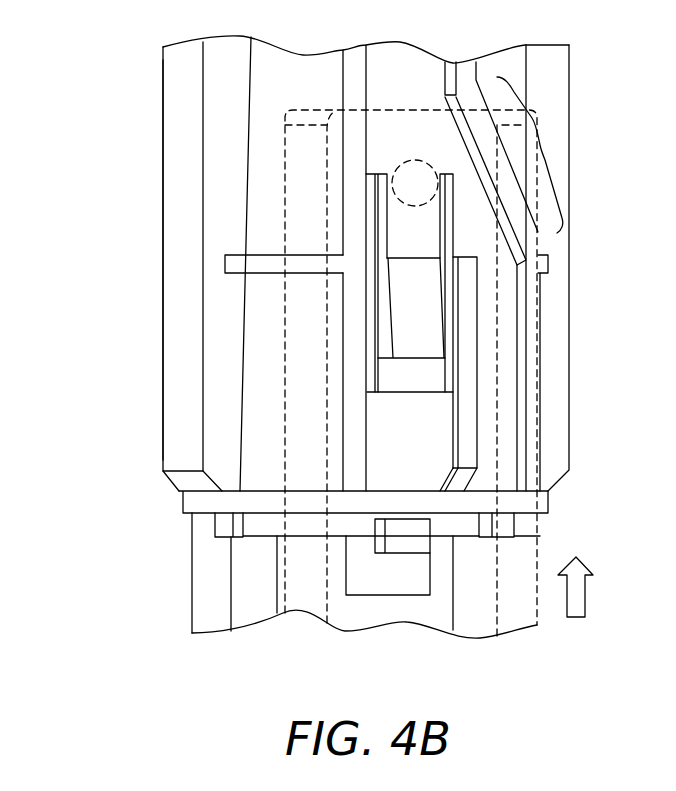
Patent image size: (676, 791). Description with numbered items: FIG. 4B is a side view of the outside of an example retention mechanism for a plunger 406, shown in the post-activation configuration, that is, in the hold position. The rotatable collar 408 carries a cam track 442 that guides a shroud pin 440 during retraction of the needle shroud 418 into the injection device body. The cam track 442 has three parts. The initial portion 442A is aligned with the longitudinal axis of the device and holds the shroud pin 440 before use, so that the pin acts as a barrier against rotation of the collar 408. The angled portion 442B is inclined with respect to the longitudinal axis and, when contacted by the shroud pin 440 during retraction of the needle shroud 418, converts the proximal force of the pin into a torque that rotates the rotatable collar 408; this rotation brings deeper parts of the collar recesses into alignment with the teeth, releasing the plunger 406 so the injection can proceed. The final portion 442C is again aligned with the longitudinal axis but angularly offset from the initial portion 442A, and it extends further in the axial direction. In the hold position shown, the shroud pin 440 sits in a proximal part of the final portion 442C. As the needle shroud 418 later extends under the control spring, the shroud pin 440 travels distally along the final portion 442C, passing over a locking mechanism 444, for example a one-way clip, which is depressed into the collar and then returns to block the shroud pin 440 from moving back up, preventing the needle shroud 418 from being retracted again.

The plunger 406 is at (372, 617).
The rotatable collar 408 is at (570, 71).
The needle shroud 418 is at (540, 535).
The shroud pin 440 is at (412, 172).
The cam track 442 is at (427, 71).
The initial portion 442A is at (578, 272).
The angled portion 442B is at (547, 146).
The final portion 442C is at (150, 65).
The locking mechanism 444 is at (412, 345).